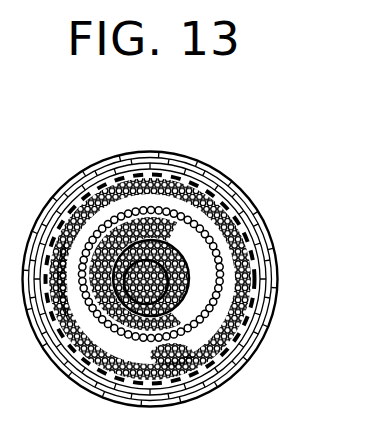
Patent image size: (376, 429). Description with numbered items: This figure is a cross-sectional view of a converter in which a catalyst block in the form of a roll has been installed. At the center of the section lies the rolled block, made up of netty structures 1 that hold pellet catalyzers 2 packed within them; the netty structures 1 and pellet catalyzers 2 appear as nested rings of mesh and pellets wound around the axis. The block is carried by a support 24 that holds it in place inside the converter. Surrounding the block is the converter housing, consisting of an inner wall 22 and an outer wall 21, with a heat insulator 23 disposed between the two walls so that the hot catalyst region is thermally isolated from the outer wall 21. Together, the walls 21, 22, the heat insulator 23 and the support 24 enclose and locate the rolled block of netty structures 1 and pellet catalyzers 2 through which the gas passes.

The netty structures 1 is at (218, 276).
The pellet catalyzers 2 is at (192, 293).
The outer wall of the converter 21 is at (220, 173).
The inner wall of the converter 22 is at (141, 172).
The heat insulator 23 is at (181, 165).
The support for a block 24 is at (257, 223).